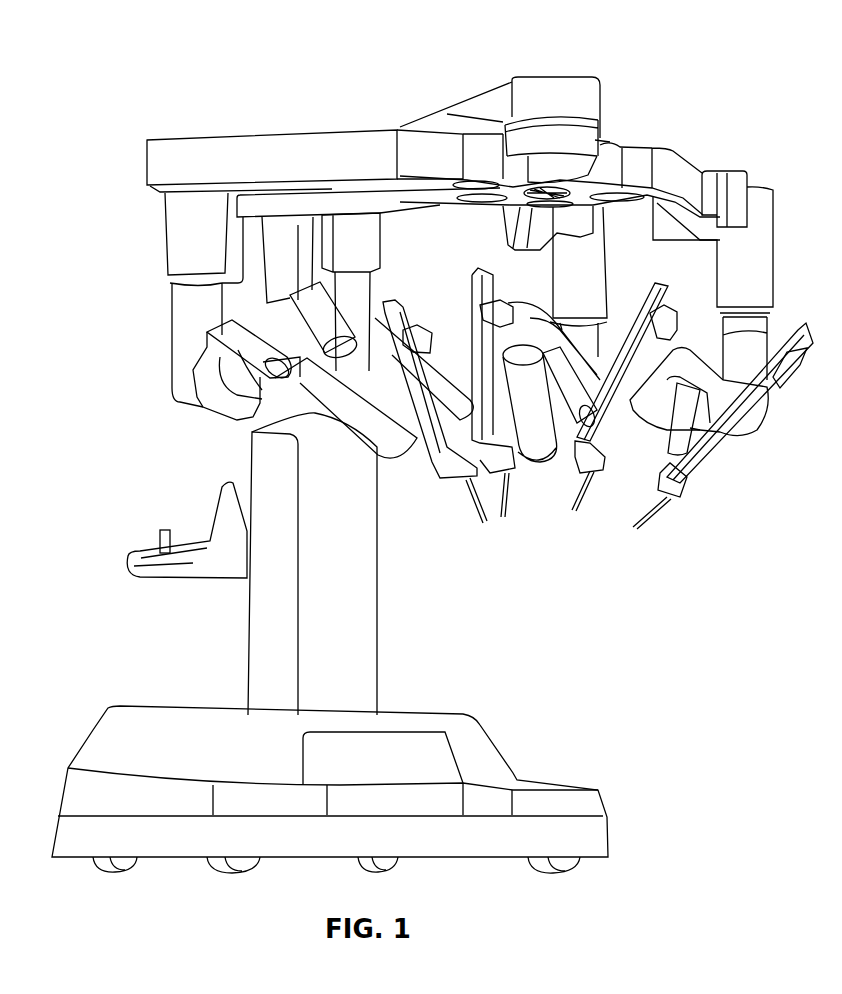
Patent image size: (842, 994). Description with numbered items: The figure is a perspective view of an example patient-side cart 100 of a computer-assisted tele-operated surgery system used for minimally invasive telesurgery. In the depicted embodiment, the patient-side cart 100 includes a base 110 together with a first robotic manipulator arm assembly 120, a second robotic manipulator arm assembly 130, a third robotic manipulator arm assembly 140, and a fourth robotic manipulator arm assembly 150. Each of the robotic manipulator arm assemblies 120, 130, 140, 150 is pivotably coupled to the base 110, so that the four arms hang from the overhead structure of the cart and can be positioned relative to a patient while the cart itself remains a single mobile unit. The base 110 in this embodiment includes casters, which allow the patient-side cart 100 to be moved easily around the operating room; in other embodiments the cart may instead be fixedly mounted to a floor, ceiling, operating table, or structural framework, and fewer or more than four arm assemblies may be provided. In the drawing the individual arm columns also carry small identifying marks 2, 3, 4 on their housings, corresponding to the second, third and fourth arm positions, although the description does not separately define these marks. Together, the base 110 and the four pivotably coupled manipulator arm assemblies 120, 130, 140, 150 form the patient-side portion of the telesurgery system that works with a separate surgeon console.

The patient-side cart 100 is at (281, 106).
The base 110 is at (567, 79).
The first robotic manipulator arm assembly 120 is at (197, 411).
The second robotic manipulator arm assembly 130 is at (385, 294).
The third robotic manipulator arm assembly 140 is at (616, 246).
The fourth robotic manipulator arm assembly 150 is at (718, 456).
The arm 2 is at (321, 295).
The arm 3 is at (578, 282).
The arm 4 is at (713, 275).